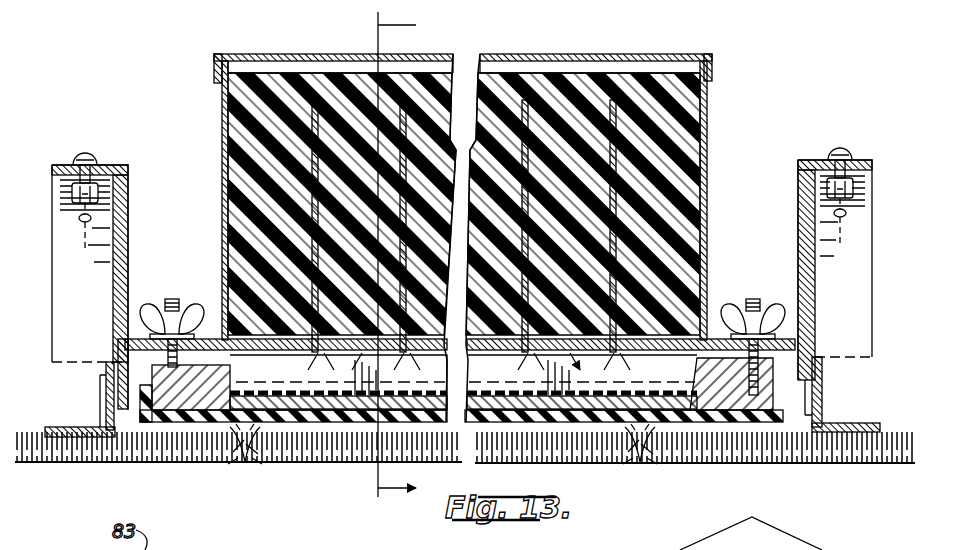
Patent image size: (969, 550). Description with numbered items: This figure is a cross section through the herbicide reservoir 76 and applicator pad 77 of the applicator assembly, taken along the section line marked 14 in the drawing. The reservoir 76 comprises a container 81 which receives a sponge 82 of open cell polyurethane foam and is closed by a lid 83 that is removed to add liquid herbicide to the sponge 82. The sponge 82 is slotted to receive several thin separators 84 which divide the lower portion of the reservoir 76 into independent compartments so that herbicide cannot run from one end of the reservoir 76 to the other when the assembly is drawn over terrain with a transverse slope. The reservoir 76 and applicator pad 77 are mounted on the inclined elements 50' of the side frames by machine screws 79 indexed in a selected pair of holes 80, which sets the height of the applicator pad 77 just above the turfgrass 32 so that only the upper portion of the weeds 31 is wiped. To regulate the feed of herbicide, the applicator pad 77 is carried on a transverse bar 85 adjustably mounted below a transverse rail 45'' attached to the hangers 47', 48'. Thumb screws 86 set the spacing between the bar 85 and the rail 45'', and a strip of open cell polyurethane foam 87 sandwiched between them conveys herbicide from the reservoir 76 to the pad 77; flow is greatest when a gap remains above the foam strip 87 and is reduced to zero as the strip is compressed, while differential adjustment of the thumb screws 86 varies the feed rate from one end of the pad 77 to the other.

The section line 14- 14 is at (373, 257).
The weeds 31 is at (238, 432).
The turfgrass 32 is at (80, 450).
The transverse rail 45'' is at (428, 351).
The hanger 47' is at (119, 263).
The hanger 48' is at (808, 270).
The inclined element 50' is at (475, 249).
The herbicide reservoir 76 is at (210, 97).
The applicator pad 77 is at (330, 432).
The machine screw 79 is at (96, 156).
The holes 80 is at (84, 222).
The container 81 is at (708, 104).
The sponge 82 is at (471, 72).
The lid 83 is at (253, 54).
The separators 84 is at (313, 100).
The transverse bar 85 is at (170, 422).
The thumb screws 86 is at (160, 332).
The foam strip 87 is at (213, 345).